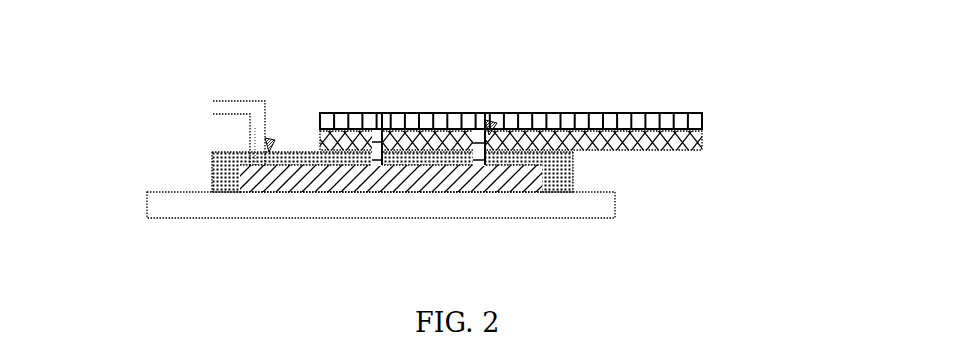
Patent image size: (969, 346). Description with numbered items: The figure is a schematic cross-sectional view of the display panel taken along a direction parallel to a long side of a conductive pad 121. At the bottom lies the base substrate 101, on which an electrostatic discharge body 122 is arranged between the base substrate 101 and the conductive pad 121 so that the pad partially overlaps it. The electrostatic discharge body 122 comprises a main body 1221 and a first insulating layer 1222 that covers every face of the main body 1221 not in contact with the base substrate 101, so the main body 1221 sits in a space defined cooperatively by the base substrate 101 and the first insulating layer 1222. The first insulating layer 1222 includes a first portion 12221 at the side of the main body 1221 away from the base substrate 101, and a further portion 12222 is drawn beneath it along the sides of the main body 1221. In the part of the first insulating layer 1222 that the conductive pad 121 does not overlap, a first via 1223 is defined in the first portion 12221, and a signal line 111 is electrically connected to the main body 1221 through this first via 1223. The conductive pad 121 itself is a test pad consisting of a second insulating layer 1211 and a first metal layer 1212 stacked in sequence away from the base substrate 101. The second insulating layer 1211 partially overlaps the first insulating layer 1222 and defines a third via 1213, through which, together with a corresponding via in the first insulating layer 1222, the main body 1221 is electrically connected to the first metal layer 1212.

The base substrate 101 is at (388, 210).
The signal line 111 is at (213, 101).
The conductive pad 121 is at (585, 115).
The second insulating layer 1211 is at (702, 142).
The first metal layer 1212 is at (702, 121).
The third via 1213 is at (492, 126).
The electrostatic discharge body 122 is at (336, 193).
The main body 1221 is at (290, 180).
The first insulating layer 1222 is at (312, 161).
The first portion 12221 is at (212, 152).
The second adhesive layer 12222 is at (212, 187).
The first via 1223 is at (273, 140).